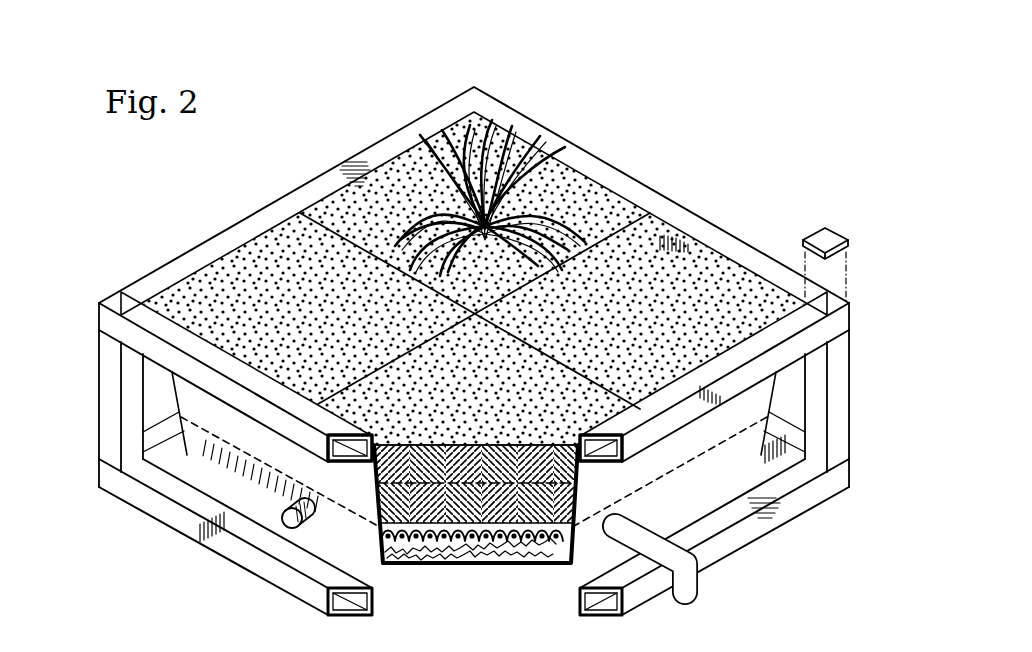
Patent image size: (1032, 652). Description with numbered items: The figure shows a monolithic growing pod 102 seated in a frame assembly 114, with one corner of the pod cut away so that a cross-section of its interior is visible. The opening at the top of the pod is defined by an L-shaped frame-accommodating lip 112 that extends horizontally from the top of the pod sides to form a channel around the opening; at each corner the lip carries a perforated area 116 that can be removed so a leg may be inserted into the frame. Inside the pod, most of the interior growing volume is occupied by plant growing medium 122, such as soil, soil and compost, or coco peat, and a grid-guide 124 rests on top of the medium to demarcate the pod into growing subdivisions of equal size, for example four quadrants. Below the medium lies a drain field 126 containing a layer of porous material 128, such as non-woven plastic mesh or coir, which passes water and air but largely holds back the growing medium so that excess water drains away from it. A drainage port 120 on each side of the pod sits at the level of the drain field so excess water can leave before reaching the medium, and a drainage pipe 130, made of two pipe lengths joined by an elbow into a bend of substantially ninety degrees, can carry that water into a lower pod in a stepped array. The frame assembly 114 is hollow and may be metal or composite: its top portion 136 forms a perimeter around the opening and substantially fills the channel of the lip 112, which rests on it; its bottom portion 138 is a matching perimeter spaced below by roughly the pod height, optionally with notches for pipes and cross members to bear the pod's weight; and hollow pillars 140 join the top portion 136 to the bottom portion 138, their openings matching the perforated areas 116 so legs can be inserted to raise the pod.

The monolithic growing pod 102 is at (583, 160).
The frame-accommodating lip 112 is at (122, 333).
The frame assembly 114 is at (121, 500).
The perforated area 116 is at (830, 240).
The drainage port 120 is at (289, 519).
The plant growing medium 122 is at (692, 275).
The grid-guide 124 is at (347, 240).
The drain field 126 is at (583, 538).
The porous material 128 is at (477, 552).
The drainage pipe 130 is at (698, 582).
The top portion 136 is at (348, 448).
The bottom portion 138 is at (833, 482).
The hollow pillar 140 is at (135, 405).